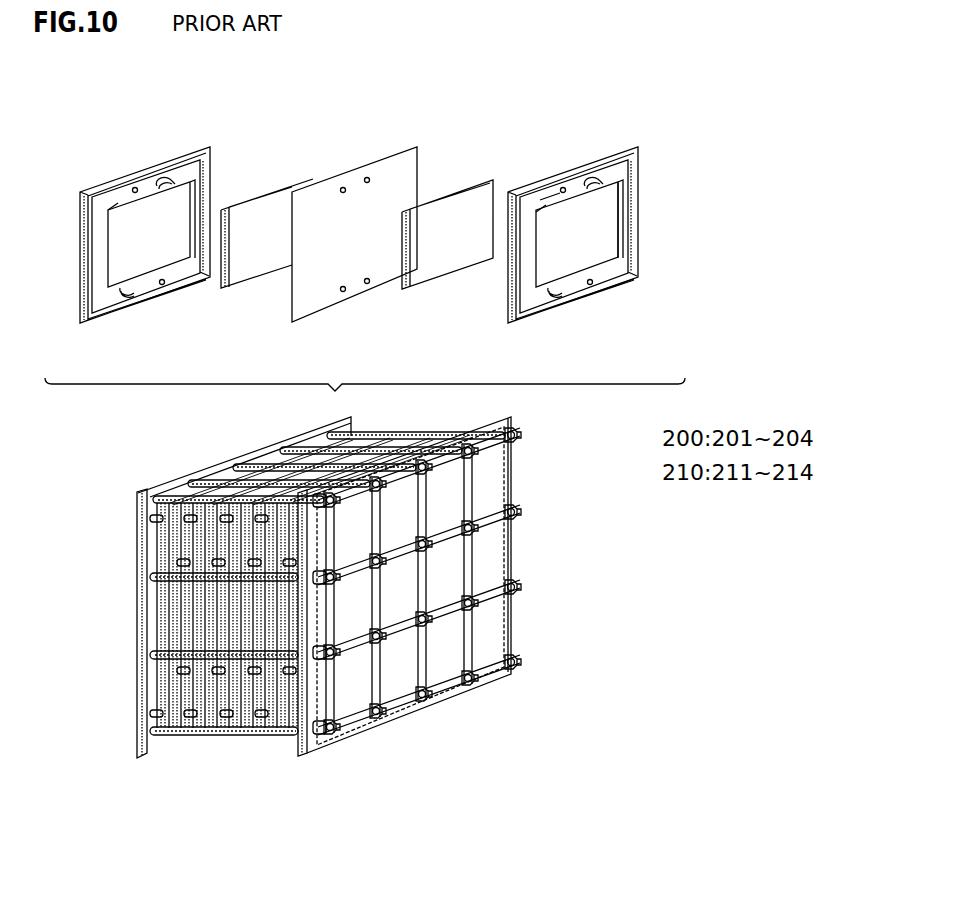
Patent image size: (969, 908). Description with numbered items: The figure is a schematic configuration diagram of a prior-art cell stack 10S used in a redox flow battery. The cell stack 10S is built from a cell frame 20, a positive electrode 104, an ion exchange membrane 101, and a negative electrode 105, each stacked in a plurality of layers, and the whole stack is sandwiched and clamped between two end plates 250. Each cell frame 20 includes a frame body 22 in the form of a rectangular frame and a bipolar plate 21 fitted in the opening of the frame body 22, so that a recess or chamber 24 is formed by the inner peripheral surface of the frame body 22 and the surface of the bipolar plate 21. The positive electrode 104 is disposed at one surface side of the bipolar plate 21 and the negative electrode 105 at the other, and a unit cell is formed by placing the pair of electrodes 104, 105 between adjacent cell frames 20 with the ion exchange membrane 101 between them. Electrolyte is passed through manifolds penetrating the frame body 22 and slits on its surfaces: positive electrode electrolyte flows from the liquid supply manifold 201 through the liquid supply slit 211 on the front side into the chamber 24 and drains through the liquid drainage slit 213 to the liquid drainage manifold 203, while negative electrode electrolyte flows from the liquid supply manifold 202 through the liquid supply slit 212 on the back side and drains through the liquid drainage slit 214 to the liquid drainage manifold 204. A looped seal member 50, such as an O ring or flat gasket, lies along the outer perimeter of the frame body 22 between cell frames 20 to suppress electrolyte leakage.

The cell stack 10S is at (522, 558).
The cell frame 20 is at (219, 157).
The bipolar plate 21 is at (604, 196).
The frame body 22 is at (623, 240).
The recess (chamber) 24 is at (118, 242).
The seal member 50 is at (90, 283).
The ion exchange membrane 101 is at (377, 160).
The positive electrode 104 is at (268, 270).
The negative electrode 105 is at (432, 277).
The liquid supply manifold 201 is at (138, 298).
The liquid supply manifold 202 is at (160, 292).
The liquid drainage manifold 203 is at (160, 174).
The liquid drainage manifold 204 is at (133, 186).
The liquid supply slit 211 is at (126, 294).
The liquid supply slit 212 is at (182, 285).
The liquid drainage slit 213 is at (174, 178).
The liquid drainage slit 214 is at (117, 202).
The end plate 250 is at (135, 512).